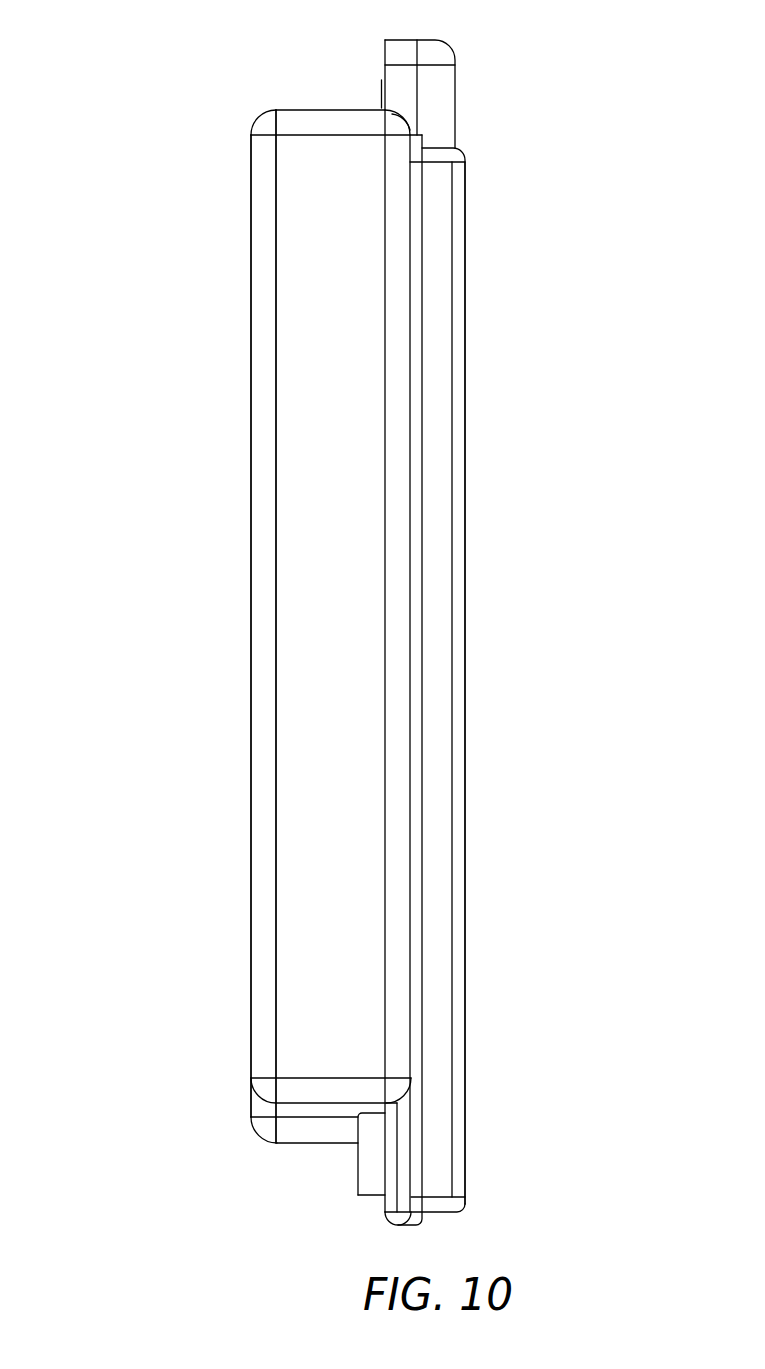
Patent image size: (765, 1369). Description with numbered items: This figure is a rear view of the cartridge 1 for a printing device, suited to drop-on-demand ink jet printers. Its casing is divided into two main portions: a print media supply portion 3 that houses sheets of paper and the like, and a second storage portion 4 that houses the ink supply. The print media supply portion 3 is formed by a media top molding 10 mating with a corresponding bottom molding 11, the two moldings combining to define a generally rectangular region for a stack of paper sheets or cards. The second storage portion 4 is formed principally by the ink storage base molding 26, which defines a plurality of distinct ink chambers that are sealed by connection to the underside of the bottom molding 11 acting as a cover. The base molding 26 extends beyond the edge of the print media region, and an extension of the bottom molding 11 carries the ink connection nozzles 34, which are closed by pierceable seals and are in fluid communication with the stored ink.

The cartridge 1 is at (165, 573).
The print media supply portion 3 is at (298, 110).
The second storage portion 4 is at (468, 640).
The media top molding 10 is at (322, 788).
The bottom molding 11 is at (403, 918).
The ink storage base molding 26 is at (432, 1112).
The ink connection nozzles 34 is at (373, 1165).